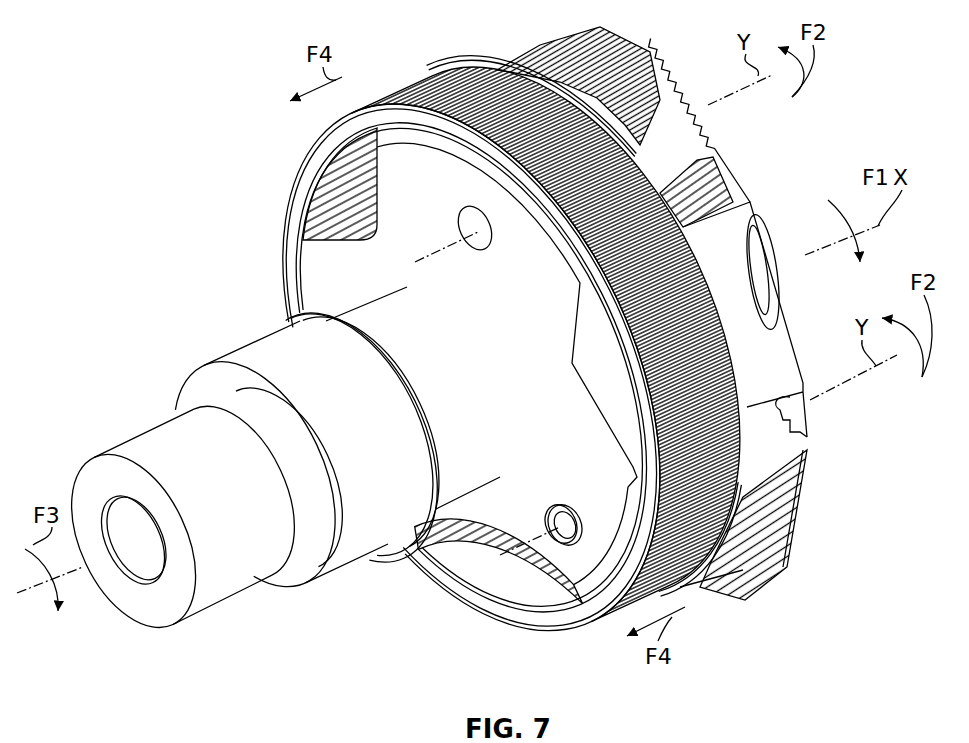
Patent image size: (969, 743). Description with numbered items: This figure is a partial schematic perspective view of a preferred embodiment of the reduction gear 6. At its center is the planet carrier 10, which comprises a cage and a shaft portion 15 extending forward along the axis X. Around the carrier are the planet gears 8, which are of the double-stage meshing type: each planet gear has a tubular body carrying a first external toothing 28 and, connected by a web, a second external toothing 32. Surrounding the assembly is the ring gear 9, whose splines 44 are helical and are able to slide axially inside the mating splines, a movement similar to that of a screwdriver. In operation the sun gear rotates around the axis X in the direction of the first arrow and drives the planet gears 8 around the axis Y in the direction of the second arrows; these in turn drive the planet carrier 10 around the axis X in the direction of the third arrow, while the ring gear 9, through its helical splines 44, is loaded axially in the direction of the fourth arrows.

The reduction gear 6 is at (885, 70).
The planet gears 8 is at (668, 52).
The ring gear 9 is at (366, 105).
The planet carrier 10 is at (538, 575).
The shaft portion 15 is at (320, 585).
The first external toothing 28 is at (482, 158).
The second external toothing 32 is at (598, 28).
The splines 44 is at (402, 100).